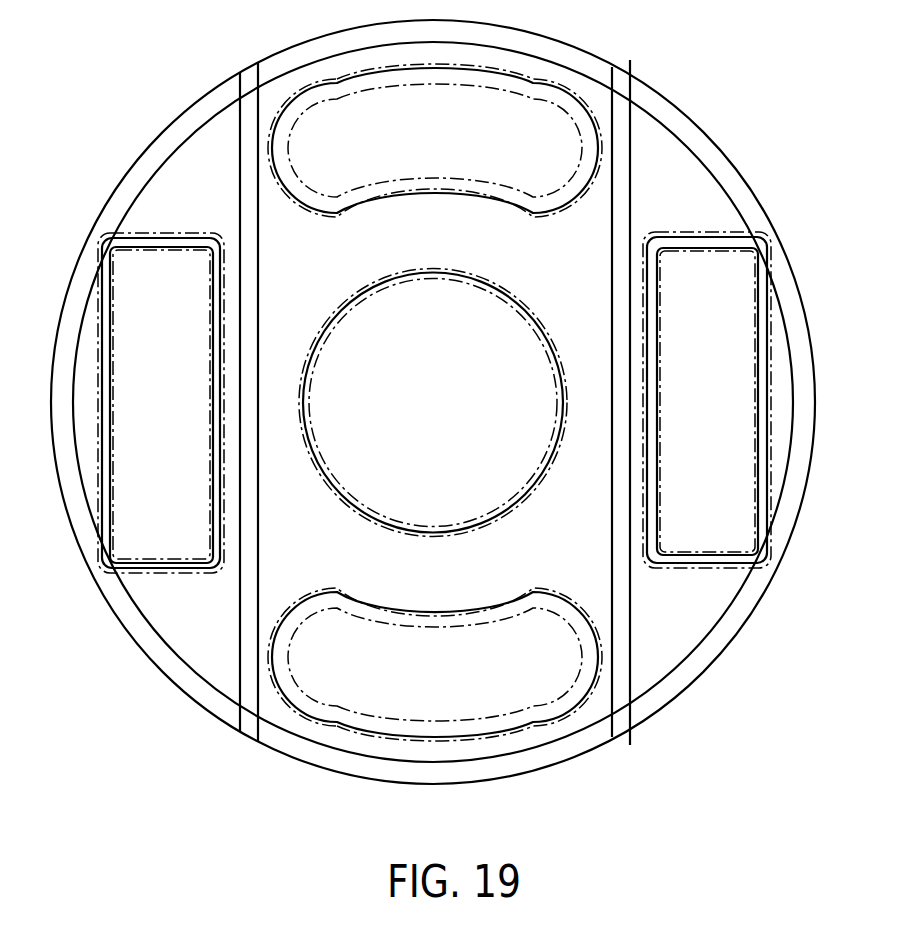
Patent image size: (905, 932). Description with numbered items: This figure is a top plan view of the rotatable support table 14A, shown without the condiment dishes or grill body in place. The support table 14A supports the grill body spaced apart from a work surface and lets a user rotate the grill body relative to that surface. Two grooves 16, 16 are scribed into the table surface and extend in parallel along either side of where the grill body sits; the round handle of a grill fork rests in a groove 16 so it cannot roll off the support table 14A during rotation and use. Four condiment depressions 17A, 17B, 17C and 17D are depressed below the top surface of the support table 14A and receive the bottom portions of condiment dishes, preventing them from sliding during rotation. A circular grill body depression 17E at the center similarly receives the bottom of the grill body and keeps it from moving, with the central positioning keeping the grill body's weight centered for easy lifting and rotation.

The support table 14A is at (695, 125).
The groove 16 is at (247, 708).
The condiment depression 17A is at (143, 238).
The condiment depression 17B is at (745, 237).
The condiment depression 17C is at (337, 718).
The condiment depression 17D is at (498, 77).
The grill body depression 17E is at (355, 300).